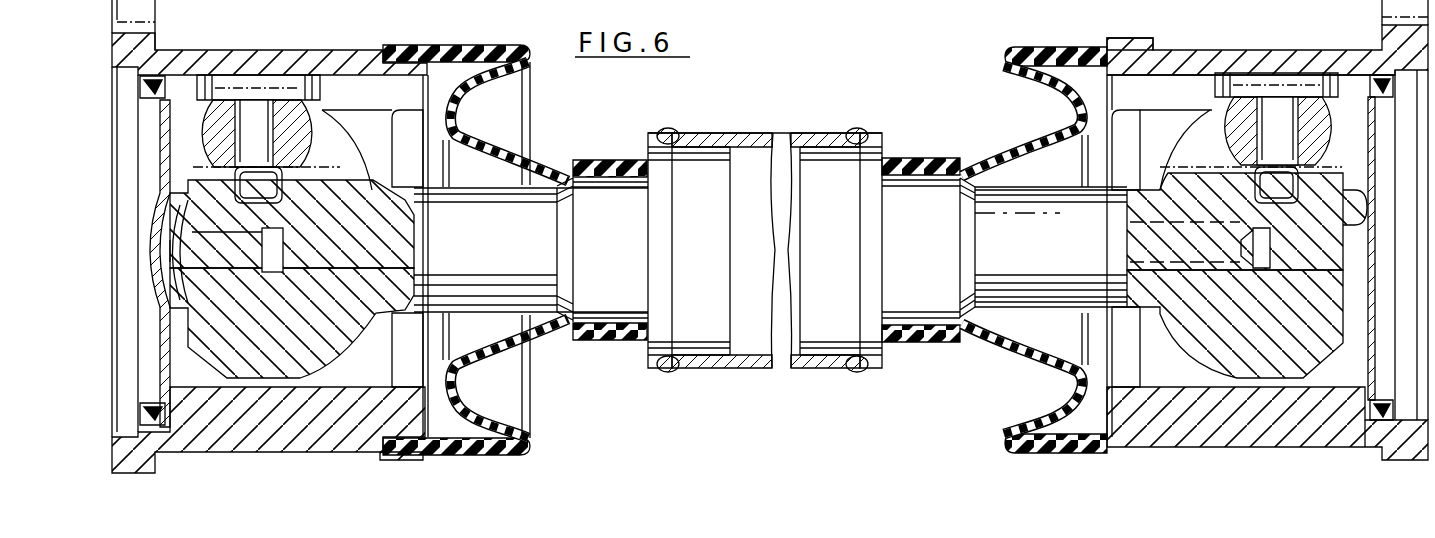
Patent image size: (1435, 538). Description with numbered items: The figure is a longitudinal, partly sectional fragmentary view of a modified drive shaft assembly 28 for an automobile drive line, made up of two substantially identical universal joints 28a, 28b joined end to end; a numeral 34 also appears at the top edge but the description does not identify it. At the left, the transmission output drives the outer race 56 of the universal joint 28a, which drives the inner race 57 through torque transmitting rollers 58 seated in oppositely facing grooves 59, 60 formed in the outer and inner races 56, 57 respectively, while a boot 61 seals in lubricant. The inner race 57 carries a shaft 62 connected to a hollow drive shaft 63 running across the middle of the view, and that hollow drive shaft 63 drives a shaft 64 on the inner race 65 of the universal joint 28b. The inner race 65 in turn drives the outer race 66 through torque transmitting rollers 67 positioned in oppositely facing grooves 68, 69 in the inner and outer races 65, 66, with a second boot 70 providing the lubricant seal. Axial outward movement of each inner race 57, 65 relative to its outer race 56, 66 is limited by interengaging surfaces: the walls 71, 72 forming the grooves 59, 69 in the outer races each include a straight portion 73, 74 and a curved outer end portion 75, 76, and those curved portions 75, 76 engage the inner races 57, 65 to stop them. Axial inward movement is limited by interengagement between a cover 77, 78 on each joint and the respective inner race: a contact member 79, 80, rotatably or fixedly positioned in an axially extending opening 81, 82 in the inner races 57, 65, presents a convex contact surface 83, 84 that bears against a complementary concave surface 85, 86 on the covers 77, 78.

The drive shaft assembly 28 is at (824, 121).
The universal joint 28a is at (219, 41).
The universal joint 28b is at (1286, 48).
The housing 34 is at (1195, 6).
The outer race 56 is at (178, 52).
The inner race 57 is at (388, 256).
The torque transmitting rollers 58 is at (228, 110).
The groove 59 is at (368, 78).
The groove 60 is at (340, 160).
The boot 61 is at (550, 163).
The shaft 62 is at (533, 254).
The hollow drive shaft 63 is at (735, 133).
The shaft 64 is at (1087, 252).
The inner race 65 is at (1174, 328).
The outer race 66 is at (1158, 47).
The torque transmitting rollers 67 is at (1234, 128).
The groove 68 is at (1190, 148).
The groove 69 is at (1163, 77).
The boot 70 is at (985, 160).
The wall 71 is at (180, 111).
The wall 72 is at (1350, 103).
The straight portion 73 is at (362, 58).
The straight portion 74 is at (1187, 118).
The curved outer end portion 75 is at (403, 125).
The curved outer end portion 76 is at (1128, 118).
The cover 77 is at (168, 372).
The cover 78 is at (1362, 375).
The contact member 79 is at (170, 240).
The contact member 80 is at (1240, 230).
The axially extending opening 81 is at (190, 260).
The axially extending opening 82 is at (1240, 260).
The convex contact surface 83 is at (165, 272).
The convex contact surface 84 is at (1377, 228).
The concave surface 85 is at (173, 203).
The concave surface 86 is at (1351, 300).